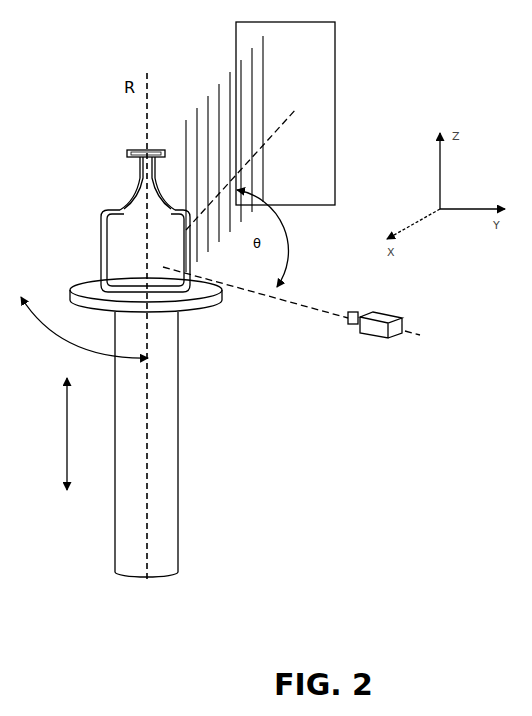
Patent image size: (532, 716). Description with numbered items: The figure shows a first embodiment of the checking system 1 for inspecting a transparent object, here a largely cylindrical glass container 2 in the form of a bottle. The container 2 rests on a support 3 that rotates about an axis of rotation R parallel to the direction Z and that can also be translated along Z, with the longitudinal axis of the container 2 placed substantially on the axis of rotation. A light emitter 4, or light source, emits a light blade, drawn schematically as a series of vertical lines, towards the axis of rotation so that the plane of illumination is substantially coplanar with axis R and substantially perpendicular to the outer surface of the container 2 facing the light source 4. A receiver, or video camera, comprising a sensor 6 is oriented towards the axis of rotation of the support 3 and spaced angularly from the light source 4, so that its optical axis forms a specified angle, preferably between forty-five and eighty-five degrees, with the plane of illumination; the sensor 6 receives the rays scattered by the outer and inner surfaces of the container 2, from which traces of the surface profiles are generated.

The checking system 1 is at (267, 418).
The glass container 2 is at (120, 252).
The support 3 is at (200, 311).
The light emitter 4 is at (310, 63).
The sensor 6 is at (368, 328).